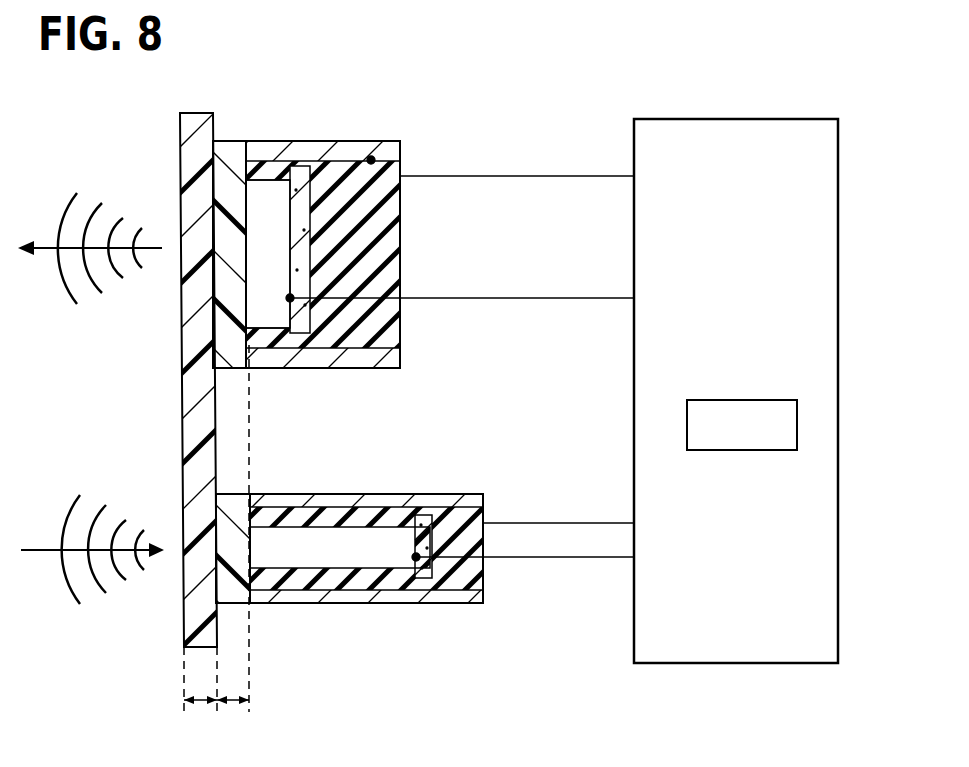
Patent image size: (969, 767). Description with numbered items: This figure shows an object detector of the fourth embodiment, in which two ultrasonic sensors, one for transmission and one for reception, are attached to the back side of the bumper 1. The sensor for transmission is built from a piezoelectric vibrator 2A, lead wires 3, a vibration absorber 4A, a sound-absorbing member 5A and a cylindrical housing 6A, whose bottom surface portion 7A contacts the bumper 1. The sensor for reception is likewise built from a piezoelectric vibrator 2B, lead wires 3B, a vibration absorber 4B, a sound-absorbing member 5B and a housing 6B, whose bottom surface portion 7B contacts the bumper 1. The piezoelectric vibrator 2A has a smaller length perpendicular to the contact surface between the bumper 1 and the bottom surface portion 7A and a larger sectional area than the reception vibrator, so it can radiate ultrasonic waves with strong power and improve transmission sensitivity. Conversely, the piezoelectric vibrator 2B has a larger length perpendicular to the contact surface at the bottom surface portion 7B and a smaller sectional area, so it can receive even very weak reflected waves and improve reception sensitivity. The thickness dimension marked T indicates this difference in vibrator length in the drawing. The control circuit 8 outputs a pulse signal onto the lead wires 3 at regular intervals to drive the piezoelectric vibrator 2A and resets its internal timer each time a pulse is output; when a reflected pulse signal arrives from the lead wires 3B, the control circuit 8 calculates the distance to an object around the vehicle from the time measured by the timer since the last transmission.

The bumper 1 is at (198, 133).
The bottom surface portion of the housing 6A 7A is at (227, 243).
The piezoelectric vibrator 2A is at (265, 195).
The cylindrical housing 6A is at (376, 150).
The sound-absorbing member 5A is at (297, 335).
The vibration absorber 4A is at (365, 310).
The lead wires 3 is at (551, 175).
The bottom surface portion of the housing 6B 7B is at (232, 550).
The piezoelectric vibrator 2B is at (352, 547).
The housing 6B is at (452, 508).
The sound-absorbing member 5B is at (422, 580).
The vibration absorber 4B is at (477, 578).
The lead wires 3B is at (553, 521).
The control circuit 8 is at (735, 119).
The thickness dimension T is at (216, 542).